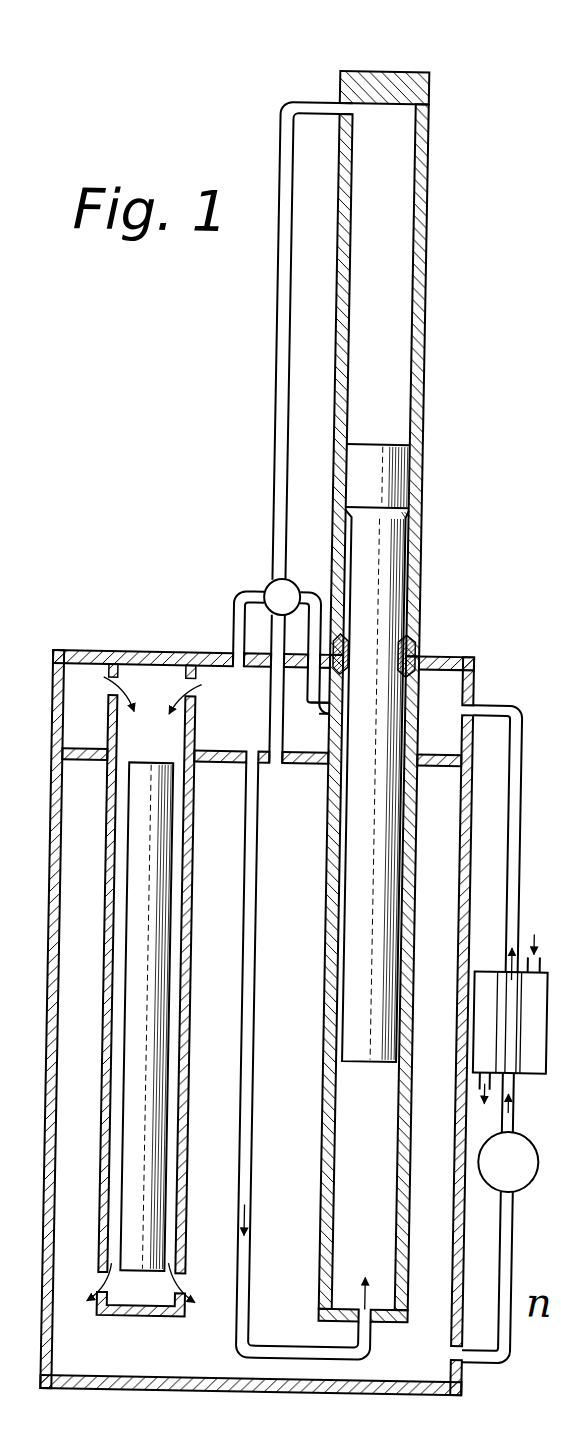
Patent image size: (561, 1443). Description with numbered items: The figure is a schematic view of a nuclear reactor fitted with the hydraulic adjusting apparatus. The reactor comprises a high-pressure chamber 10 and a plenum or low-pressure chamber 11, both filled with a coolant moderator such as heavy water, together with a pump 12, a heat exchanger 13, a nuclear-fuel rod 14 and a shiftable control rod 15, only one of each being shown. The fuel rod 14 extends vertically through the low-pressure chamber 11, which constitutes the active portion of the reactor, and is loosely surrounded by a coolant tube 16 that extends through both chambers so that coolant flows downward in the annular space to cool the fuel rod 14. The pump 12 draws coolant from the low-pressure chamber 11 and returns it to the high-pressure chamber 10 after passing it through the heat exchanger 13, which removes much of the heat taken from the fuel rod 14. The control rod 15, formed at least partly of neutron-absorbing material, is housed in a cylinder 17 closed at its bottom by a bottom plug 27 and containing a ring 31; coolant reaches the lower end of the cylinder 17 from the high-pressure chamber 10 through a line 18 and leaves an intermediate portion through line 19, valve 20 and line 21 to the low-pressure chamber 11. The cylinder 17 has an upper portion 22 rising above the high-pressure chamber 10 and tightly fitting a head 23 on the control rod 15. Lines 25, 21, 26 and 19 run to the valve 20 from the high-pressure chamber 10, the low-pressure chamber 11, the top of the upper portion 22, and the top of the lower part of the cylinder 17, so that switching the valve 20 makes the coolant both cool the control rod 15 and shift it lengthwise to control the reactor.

The high-pressure chamber 10 is at (72, 693).
The low-pressure chamber 11 is at (448, 795).
The pump 12 is at (528, 1189).
The heat exchanger 13 is at (497, 968).
The nuclear-fuel rod 14 is at (143, 1202).
The control rod 15 is at (367, 929).
The coolant tube 16 is at (114, 1086).
The cylinder 17 is at (326, 1122).
The line 18 is at (254, 1043).
The line 19 is at (317, 703).
The valve 20 is at (266, 581).
The line 21 is at (271, 698).
The upper portion of the cylinder 22 is at (424, 374).
The head 23 is at (368, 452).
The line 25 is at (226, 622).
The line 26 is at (265, 405).
The bottom plug 27 is at (334, 961).
The ring 31 is at (414, 646).